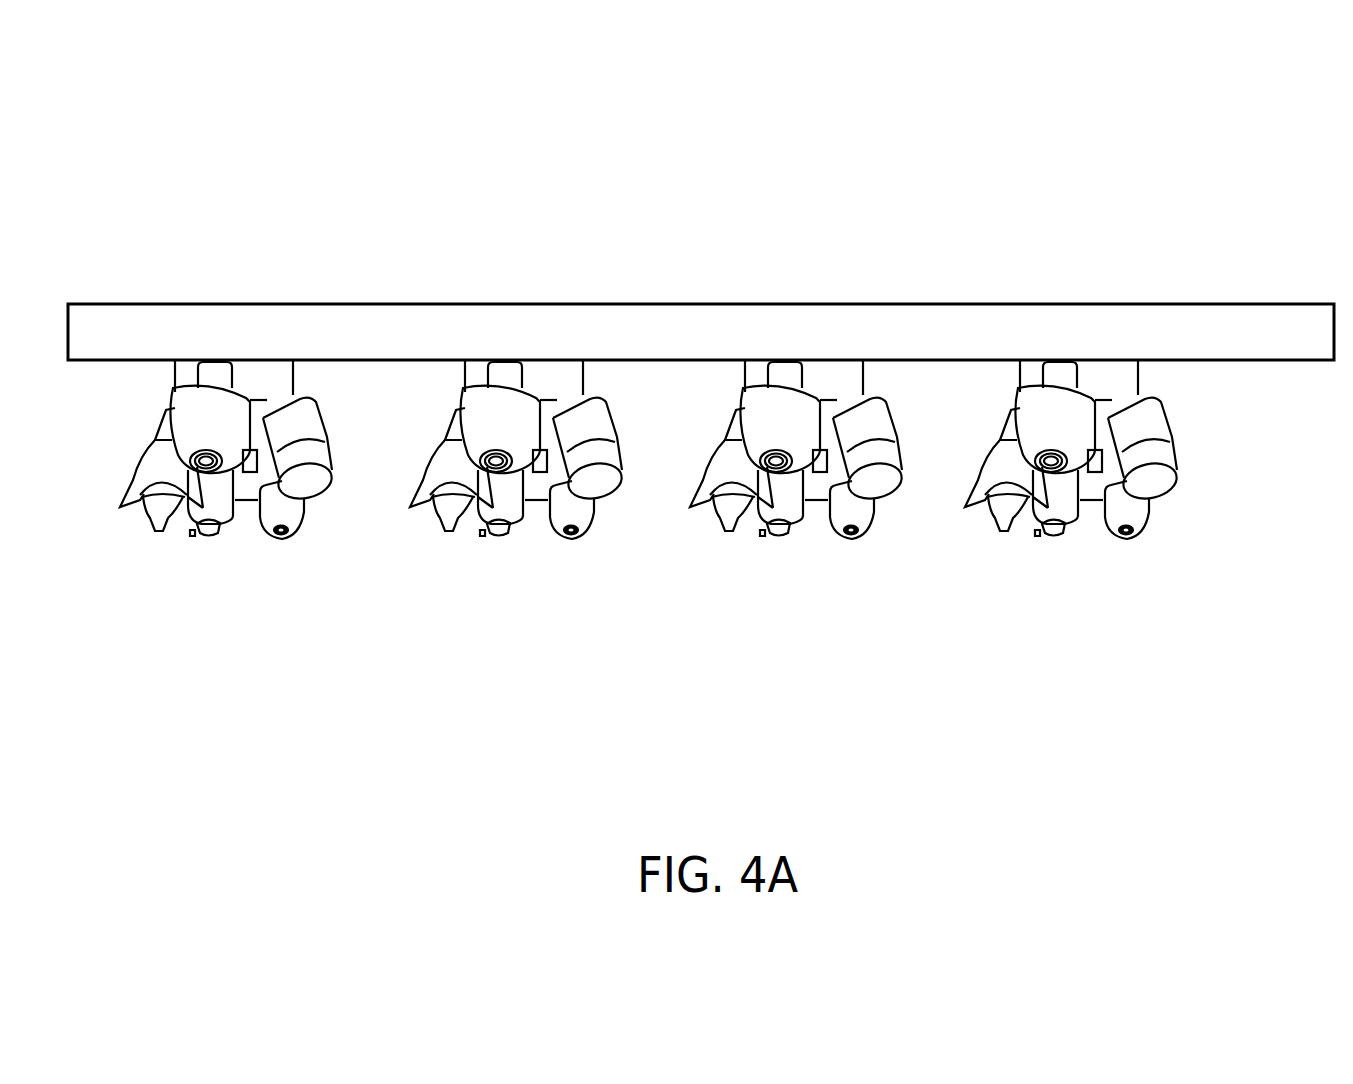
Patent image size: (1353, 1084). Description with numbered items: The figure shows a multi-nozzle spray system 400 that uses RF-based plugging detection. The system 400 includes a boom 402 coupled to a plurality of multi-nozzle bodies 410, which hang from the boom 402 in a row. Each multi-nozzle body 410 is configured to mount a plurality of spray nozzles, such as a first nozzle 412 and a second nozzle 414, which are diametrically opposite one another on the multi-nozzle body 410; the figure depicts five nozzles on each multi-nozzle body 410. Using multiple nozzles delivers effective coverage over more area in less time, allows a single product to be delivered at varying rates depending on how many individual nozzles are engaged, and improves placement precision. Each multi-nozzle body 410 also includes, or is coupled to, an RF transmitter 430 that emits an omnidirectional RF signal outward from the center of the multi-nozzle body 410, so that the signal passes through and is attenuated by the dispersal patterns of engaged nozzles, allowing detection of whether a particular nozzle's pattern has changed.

The system 400 is at (897, 198).
The boom 402 is at (1015, 323).
The multi-nozzle body 410 is at (257, 408).
The first nozzle 412 is at (478, 432).
The second nozzle 414 is at (595, 520).
The RF transmitter 430 is at (252, 473).